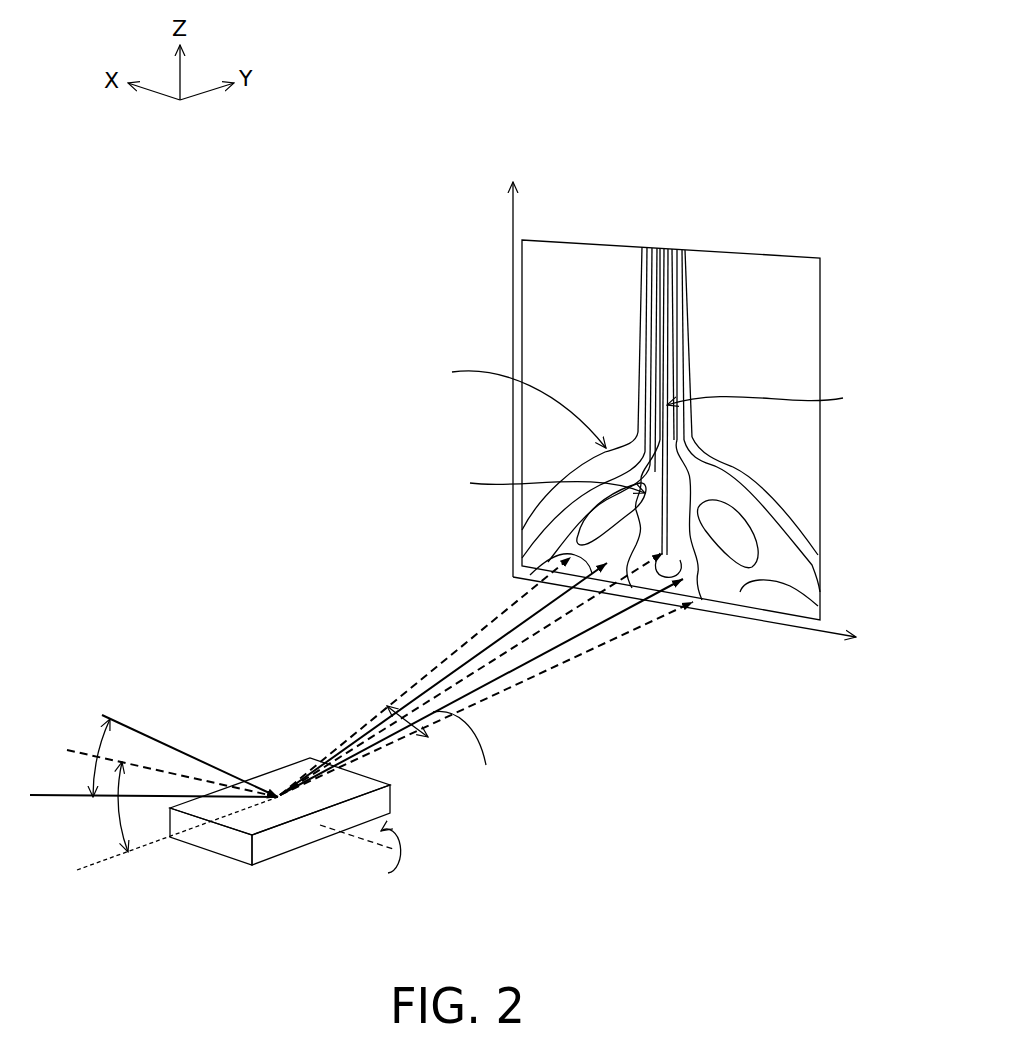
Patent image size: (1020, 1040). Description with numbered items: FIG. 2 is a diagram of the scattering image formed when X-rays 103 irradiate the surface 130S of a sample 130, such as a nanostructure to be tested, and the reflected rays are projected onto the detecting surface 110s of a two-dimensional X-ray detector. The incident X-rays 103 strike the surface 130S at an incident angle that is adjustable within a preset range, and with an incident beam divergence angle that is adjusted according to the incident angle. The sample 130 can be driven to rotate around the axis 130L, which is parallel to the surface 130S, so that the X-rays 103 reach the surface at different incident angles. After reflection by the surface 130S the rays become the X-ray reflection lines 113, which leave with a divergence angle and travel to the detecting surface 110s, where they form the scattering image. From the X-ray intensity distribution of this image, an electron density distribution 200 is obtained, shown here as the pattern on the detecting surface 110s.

The detecting surface 110s is at (573, 222).
The electron density distribution 200 is at (797, 287).
The X-ray reflection lines 113 is at (607, 626).
The X-rays 103 is at (174, 742).
The sample 130 is at (352, 856).
The surface 130S is at (344, 793).
The axis 130L is at (373, 847).